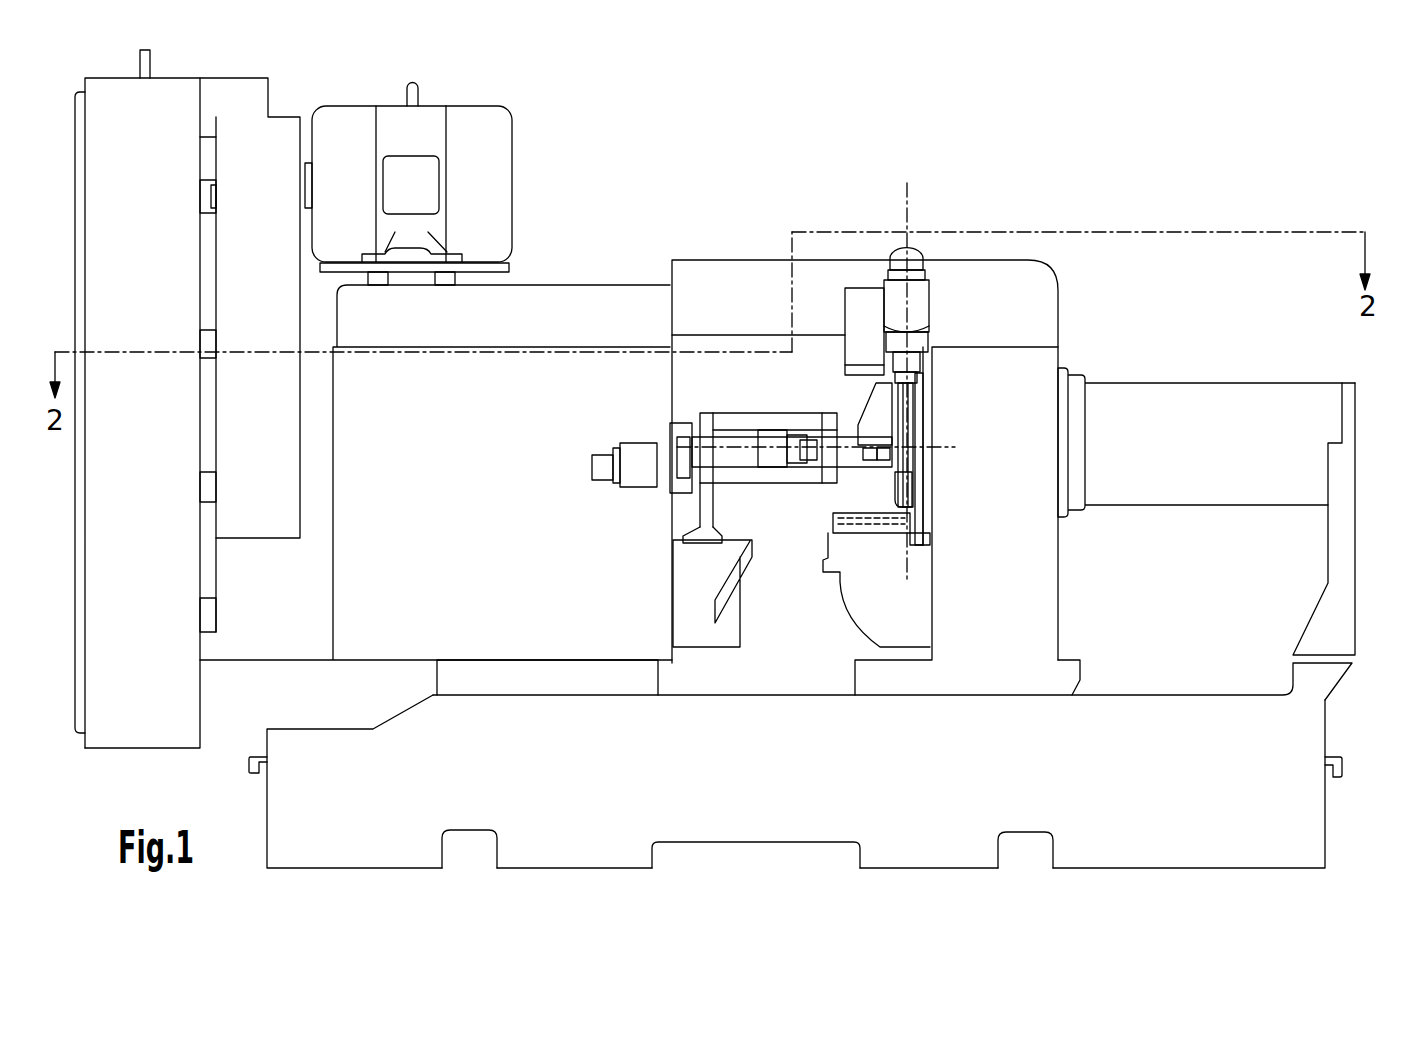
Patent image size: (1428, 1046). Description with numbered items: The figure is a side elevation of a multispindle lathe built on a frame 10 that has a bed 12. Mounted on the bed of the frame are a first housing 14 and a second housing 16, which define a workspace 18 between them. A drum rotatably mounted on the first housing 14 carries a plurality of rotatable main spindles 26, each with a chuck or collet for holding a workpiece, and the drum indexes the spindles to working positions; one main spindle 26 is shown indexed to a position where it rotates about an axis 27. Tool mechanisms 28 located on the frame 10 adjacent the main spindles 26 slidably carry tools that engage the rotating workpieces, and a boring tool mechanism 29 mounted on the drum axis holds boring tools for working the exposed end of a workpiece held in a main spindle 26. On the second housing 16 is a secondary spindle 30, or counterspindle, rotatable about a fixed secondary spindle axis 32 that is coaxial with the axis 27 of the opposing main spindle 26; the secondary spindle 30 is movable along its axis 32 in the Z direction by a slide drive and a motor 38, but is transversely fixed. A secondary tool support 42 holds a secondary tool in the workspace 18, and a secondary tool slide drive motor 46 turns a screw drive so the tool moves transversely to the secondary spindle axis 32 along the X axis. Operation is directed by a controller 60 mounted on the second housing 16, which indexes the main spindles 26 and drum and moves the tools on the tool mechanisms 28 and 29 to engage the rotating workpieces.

The frame 10 is at (802, 797).
The bed 12 is at (1141, 690).
The first housing 14 is at (1012, 602).
The second housing 16 is at (427, 547).
The workspace 18 is at (774, 648).
The main spindle 26 is at (912, 485).
The axis of rotation of main spindle 27 is at (940, 447).
The tool mechanism 28 is at (845, 322).
The boring tool mechanism 29 is at (752, 413).
The secondary spindle 30 is at (808, 462).
The secondary spindle axis 32 is at (658, 445).
The motor 38 is at (636, 442).
The secondary tool support 42 is at (850, 420).
The secondary tool slide drive motor 46 is at (923, 300).
The controller 60 is at (160, 232).